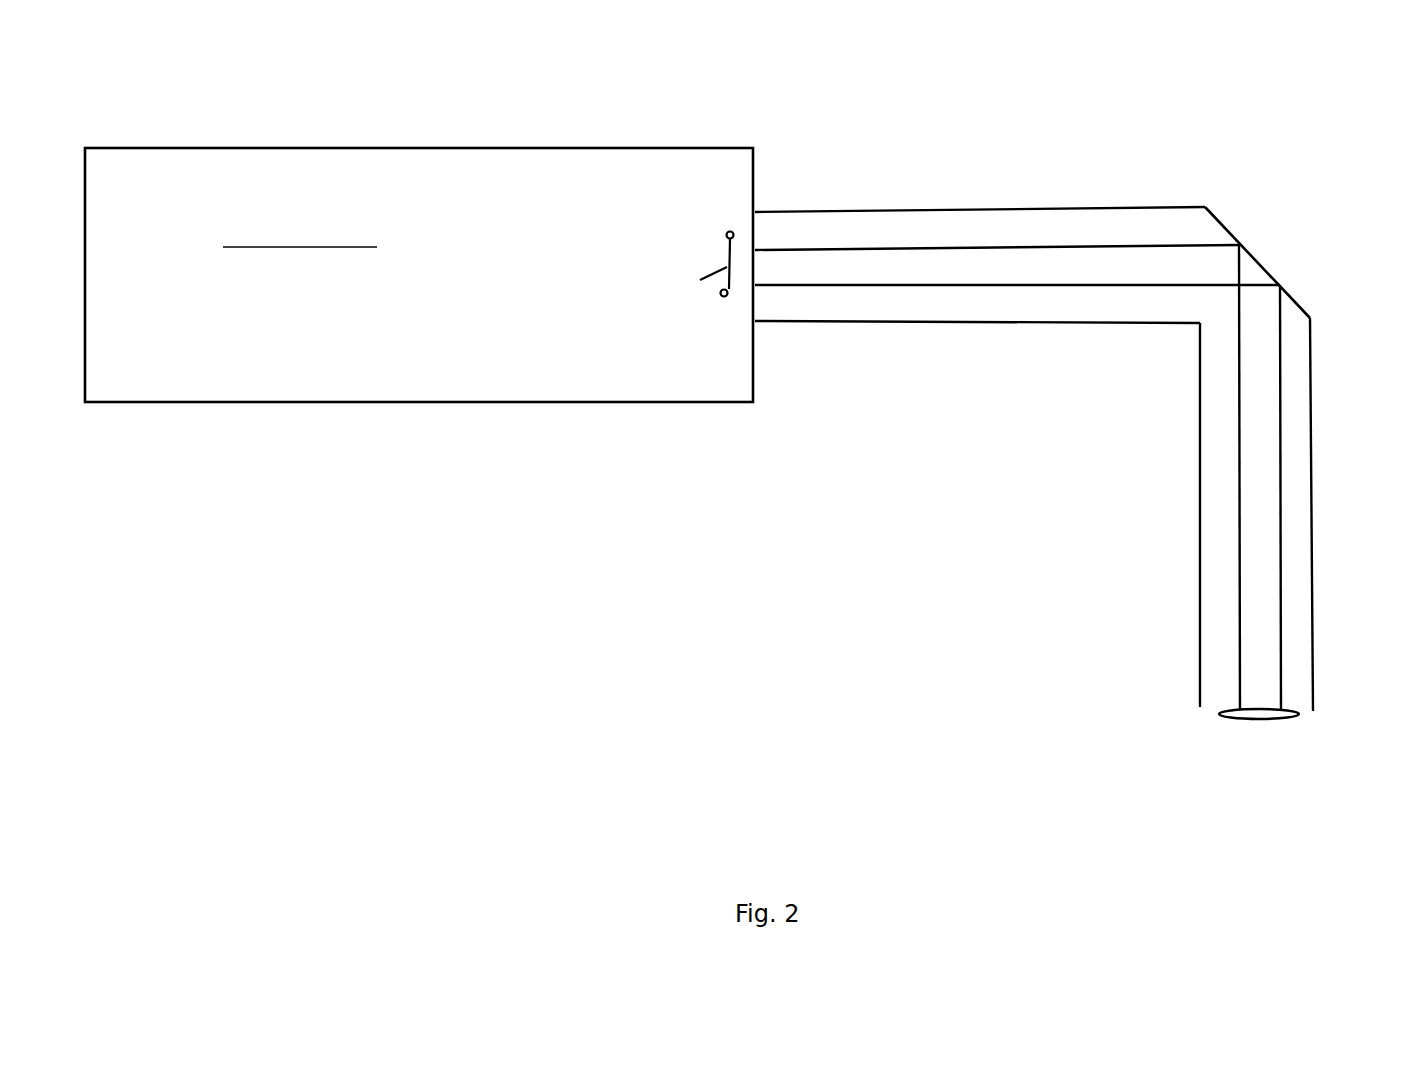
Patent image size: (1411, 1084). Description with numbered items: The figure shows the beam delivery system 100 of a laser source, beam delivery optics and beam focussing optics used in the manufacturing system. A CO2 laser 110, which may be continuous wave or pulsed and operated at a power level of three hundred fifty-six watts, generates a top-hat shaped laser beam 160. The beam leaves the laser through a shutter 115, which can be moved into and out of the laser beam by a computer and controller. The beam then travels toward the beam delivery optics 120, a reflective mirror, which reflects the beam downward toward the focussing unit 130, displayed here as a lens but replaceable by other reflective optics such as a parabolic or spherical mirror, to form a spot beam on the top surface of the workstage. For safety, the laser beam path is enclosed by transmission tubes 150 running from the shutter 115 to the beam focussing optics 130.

The laser system 100 is at (685, 90).
The CO2 laser 110 is at (419, 275).
The shutter 115 is at (700, 280).
The beam delivery optics 120 is at (1257, 262).
The focussing unit 130 is at (1213, 705).
The transmission tubes 150 is at (962, 203).
The laser beam 160 is at (1282, 555).